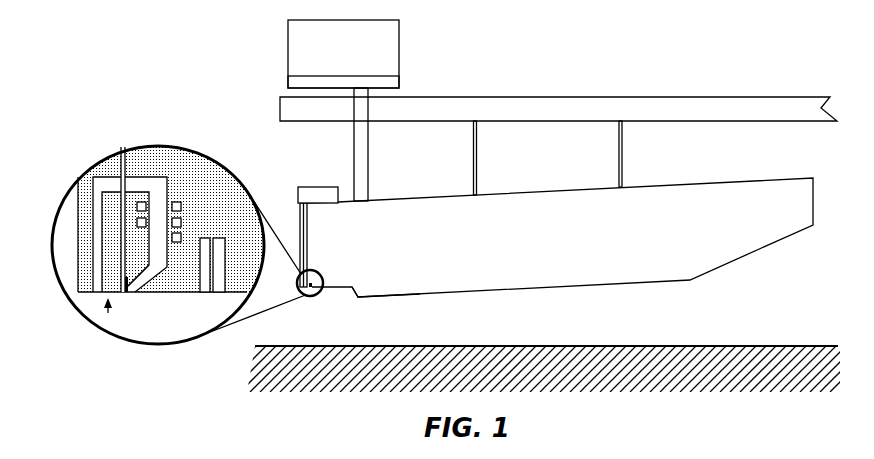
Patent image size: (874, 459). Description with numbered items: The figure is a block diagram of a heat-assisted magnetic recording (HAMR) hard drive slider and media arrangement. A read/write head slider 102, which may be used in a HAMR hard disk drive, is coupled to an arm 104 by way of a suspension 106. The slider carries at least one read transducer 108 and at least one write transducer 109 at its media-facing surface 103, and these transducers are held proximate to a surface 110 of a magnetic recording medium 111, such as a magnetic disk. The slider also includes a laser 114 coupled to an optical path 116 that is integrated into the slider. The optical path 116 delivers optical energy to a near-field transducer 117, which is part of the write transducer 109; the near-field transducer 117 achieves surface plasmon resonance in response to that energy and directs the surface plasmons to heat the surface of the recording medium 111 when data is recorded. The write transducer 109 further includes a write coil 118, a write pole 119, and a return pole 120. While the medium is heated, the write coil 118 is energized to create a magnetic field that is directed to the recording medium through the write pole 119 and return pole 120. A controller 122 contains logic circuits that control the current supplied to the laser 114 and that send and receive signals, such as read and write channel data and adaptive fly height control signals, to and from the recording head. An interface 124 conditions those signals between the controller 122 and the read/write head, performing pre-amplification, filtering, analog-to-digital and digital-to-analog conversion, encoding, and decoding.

The read/write head slider 102 is at (750, 180).
The media-facing surface 103 is at (347, 298).
The arm 104 is at (733, 104).
The suspension 106 is at (622, 180).
The read transducer 108 is at (200, 280).
The write transducer 109 is at (105, 319).
The surface 110 is at (825, 345).
The magnetic recording medium 111 is at (700, 392).
The laser 114 is at (308, 187).
The optical path 116 is at (121, 174).
The near-field transducer 117 is at (127, 293).
The write coil 118 is at (175, 200).
The write pole 119 is at (144, 286).
The return pole 120 is at (78, 273).
The controller 122 is at (402, 52).
The interface 124 is at (402, 85).